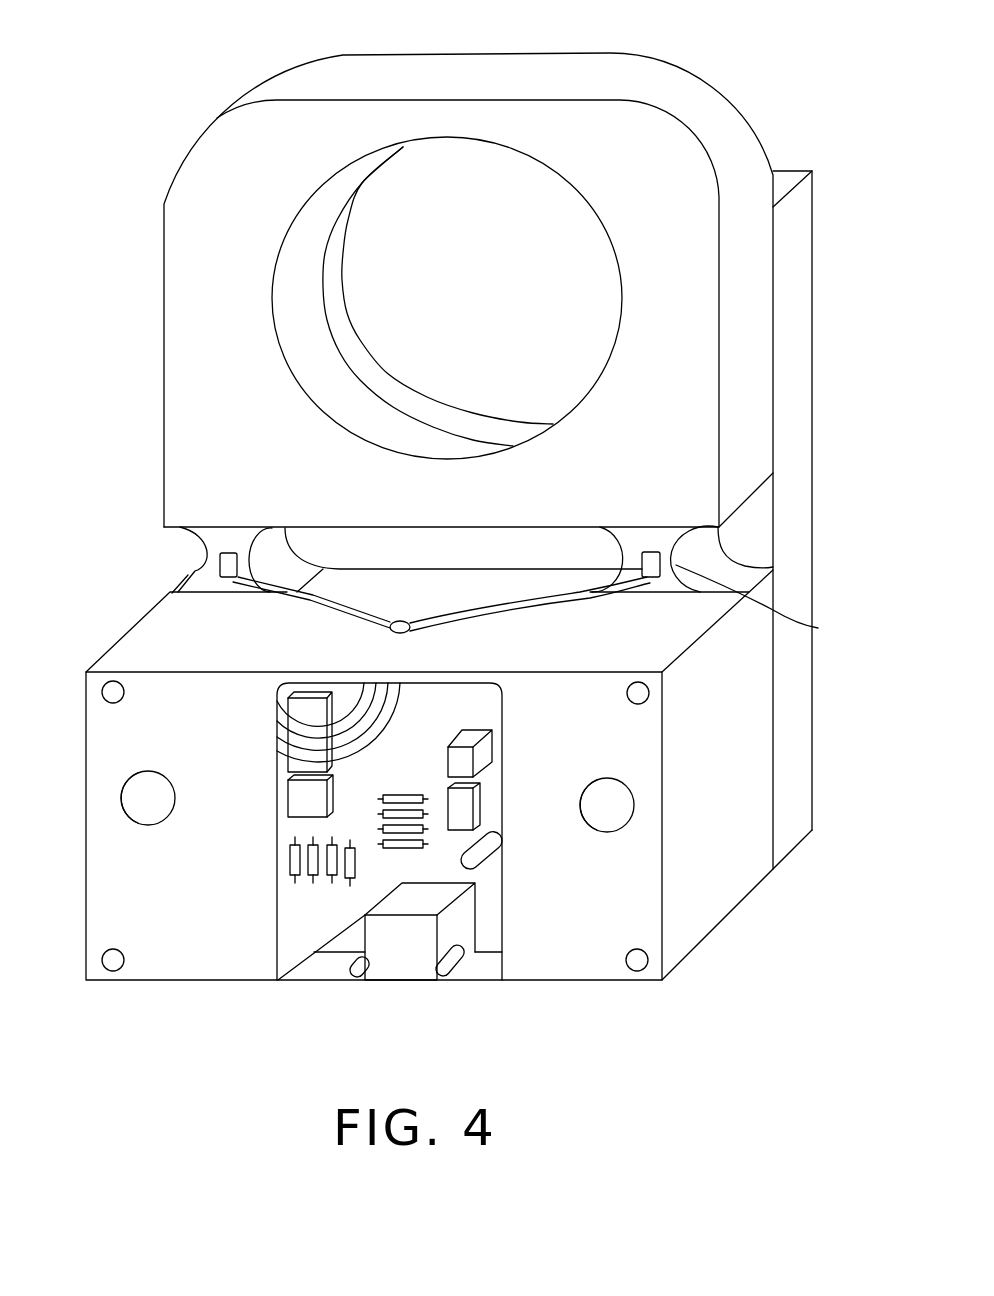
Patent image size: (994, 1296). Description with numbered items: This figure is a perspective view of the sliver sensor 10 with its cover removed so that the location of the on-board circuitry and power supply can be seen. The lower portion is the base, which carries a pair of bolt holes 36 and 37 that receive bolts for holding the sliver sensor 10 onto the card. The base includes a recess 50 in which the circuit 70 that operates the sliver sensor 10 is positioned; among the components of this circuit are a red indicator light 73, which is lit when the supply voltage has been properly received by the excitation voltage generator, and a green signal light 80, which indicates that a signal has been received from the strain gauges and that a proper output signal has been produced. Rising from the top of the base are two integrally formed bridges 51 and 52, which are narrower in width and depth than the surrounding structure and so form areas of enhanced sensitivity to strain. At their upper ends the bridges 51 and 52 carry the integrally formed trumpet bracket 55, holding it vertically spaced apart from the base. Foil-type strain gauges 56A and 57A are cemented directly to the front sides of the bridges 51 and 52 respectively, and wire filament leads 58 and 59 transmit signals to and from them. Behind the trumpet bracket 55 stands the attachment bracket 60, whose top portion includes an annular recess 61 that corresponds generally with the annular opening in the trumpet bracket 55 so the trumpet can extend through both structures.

The sliver sensor 10 is at (208, 100).
The bolt hole 36 is at (152, 812).
The bolt hole 37 is at (624, 806).
The recess 50 is at (310, 925).
The bridge 51 is at (212, 558).
The bridge 52 is at (712, 566).
The bracket 55 is at (737, 138).
The strain gauge 56A is at (208, 533).
The strain gauge 57A is at (760, 598).
The wire filament lead 58 is at (327, 608).
The wire filament lead 59 is at (542, 603).
The attachment bracket 60 is at (797, 413).
The annular recess 61 is at (327, 305).
The circuit 70 is at (429, 995).
The red indicator light 73 is at (450, 975).
The green signal light 80 is at (355, 977).